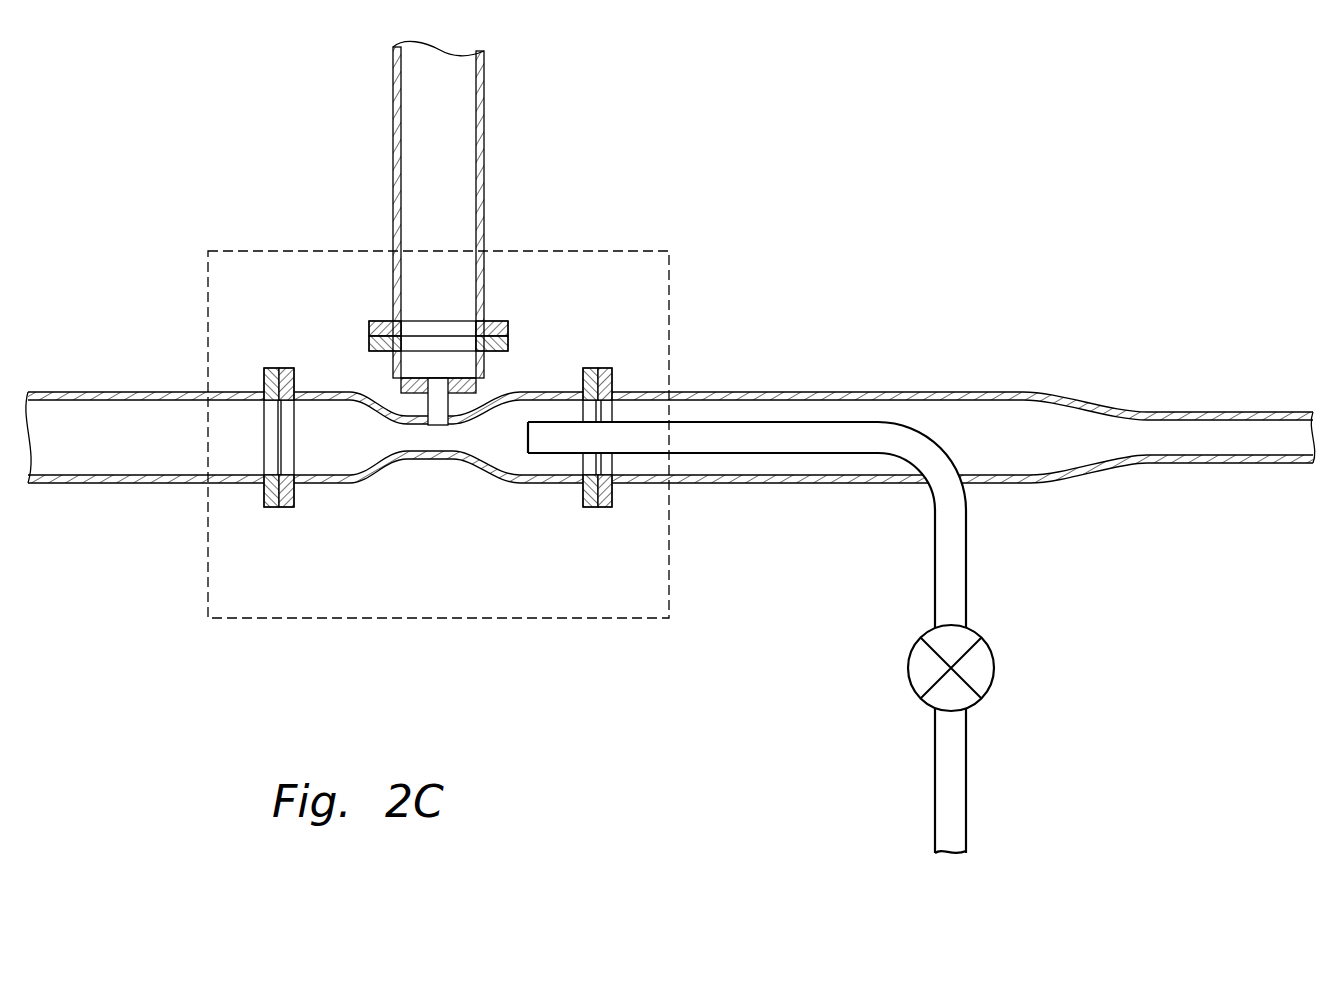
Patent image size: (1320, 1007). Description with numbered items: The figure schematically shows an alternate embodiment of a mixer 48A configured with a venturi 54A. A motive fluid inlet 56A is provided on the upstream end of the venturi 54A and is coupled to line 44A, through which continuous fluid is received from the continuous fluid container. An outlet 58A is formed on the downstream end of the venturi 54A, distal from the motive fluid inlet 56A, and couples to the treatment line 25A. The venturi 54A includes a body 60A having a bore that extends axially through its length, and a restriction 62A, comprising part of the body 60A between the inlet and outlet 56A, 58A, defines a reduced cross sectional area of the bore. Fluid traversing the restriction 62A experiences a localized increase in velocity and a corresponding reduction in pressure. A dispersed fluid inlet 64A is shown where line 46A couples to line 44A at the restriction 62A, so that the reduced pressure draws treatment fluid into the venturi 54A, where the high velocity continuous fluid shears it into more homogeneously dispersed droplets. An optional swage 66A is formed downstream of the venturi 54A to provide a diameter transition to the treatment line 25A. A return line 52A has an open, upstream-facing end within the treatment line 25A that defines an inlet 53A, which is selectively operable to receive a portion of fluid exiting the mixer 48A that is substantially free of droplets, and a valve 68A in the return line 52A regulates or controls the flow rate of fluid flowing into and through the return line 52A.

The treatment line 25A is at (1235, 412).
The line 44A is at (130, 392).
The line 46A is at (484, 148).
The mixer 48A is at (305, 250).
The return line 52A is at (966, 778).
The inlet 53A is at (522, 443).
The venturi 54A is at (518, 370).
The motive fluid inlet 56A is at (233, 428).
The outlet 58A is at (642, 415).
The body 60A is at (327, 484).
The restriction 62A is at (444, 463).
The dispersed fluid inlet 64A is at (440, 426).
The swage 66A is at (1090, 403).
The valve 68A is at (994, 668).